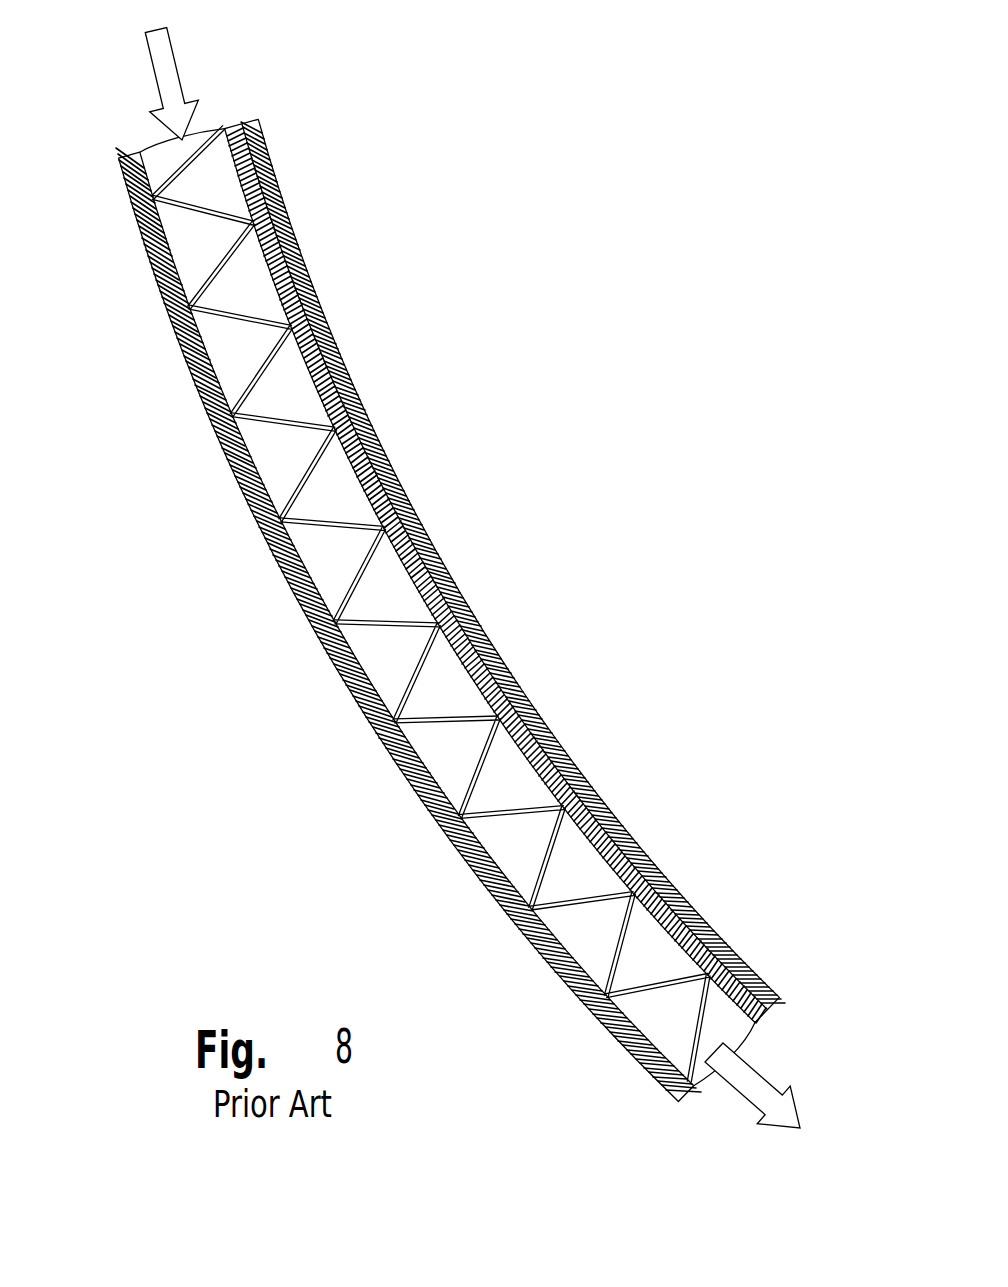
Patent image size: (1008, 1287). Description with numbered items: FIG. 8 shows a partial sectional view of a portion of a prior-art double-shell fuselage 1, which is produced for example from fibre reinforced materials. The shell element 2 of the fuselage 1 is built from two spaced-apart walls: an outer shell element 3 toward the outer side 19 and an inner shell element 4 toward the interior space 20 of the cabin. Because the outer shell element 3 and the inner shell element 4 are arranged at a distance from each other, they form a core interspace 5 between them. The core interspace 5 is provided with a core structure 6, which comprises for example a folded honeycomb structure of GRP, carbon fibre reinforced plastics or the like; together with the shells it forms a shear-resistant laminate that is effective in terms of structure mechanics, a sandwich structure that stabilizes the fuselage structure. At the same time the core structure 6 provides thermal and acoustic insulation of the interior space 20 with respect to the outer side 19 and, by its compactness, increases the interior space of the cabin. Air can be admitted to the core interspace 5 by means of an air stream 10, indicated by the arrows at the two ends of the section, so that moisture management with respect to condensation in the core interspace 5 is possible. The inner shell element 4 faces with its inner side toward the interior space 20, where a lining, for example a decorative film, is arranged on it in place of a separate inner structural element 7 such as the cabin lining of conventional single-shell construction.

The fuselage 1 is at (465, 578).
The shell element 2 is at (416, 583).
The outer shell element 3 is at (185, 350).
The inner shell element 4 is at (505, 571).
The core interspace 5 is at (322, 565).
The core structure 6 is at (383, 628).
The inner structural element 7 is at (500, 657).
The air stream 10 is at (165, 74).
The outer side 19 is at (240, 816).
The interior space 20 is at (677, 449).